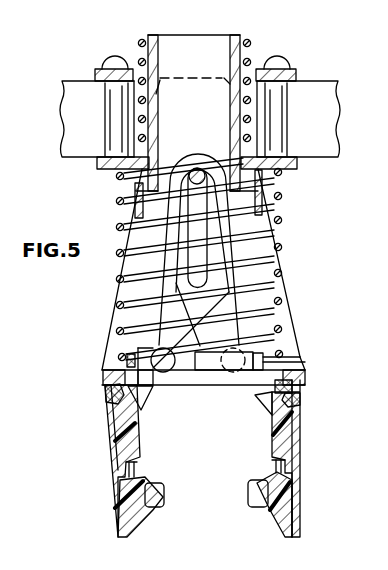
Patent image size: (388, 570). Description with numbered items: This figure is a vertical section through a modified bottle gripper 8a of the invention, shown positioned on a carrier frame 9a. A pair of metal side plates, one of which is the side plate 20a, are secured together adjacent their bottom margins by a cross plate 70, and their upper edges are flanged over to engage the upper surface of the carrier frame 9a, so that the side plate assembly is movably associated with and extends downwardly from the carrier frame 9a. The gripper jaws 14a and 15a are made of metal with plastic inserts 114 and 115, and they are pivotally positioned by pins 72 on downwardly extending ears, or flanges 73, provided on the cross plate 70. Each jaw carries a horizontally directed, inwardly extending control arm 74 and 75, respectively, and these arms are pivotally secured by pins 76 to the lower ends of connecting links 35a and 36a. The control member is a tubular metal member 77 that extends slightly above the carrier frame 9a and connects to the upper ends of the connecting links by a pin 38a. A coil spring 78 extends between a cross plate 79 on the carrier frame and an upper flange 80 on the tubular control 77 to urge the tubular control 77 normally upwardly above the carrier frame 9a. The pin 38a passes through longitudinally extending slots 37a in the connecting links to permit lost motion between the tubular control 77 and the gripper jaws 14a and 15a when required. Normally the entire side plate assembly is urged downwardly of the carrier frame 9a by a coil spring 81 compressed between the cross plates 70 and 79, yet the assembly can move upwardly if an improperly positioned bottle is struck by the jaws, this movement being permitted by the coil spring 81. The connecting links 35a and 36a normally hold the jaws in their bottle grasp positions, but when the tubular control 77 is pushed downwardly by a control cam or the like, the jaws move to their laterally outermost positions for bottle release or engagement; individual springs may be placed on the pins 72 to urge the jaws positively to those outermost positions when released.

The tubular metal member 77 is at (208, 41).
The upper flange 80 is at (139, 42).
The coil spring 78 is at (252, 55).
The carrier frame 9a is at (318, 81).
The cross plate 79 is at (293, 156).
The pin 38a is at (197, 167).
The longitudinally extending slots 37a is at (212, 253).
The coil spring 81 is at (248, 244).
The bottle gripper 8a is at (106, 273).
The connecting link 35a is at (160, 293).
The metal side plate 20a is at (280, 292).
The connecting link 36a is at (250, 324).
The control arm 74 is at (232, 338).
The pins 76 is at (151, 358).
The cross plate 70 is at (102, 371).
The ears 73 is at (150, 398).
The pins 72 is at (140, 402).
The control arm 75 is at (212, 388).
The gripper jaw 14a is at (106, 433).
The gripper jaw 15a is at (301, 426).
The plastic insert 114 is at (141, 523).
The plastic insert 115 is at (281, 521).